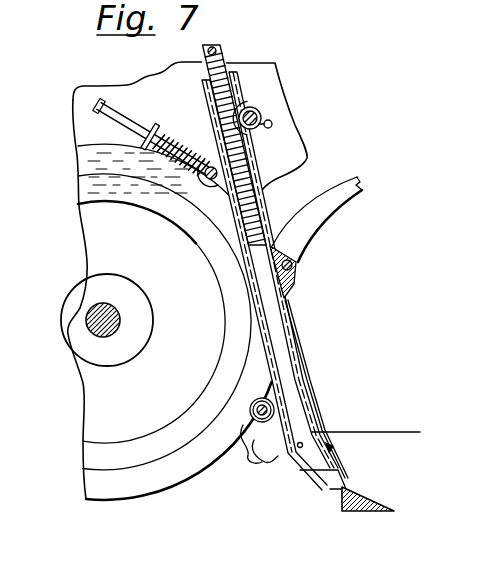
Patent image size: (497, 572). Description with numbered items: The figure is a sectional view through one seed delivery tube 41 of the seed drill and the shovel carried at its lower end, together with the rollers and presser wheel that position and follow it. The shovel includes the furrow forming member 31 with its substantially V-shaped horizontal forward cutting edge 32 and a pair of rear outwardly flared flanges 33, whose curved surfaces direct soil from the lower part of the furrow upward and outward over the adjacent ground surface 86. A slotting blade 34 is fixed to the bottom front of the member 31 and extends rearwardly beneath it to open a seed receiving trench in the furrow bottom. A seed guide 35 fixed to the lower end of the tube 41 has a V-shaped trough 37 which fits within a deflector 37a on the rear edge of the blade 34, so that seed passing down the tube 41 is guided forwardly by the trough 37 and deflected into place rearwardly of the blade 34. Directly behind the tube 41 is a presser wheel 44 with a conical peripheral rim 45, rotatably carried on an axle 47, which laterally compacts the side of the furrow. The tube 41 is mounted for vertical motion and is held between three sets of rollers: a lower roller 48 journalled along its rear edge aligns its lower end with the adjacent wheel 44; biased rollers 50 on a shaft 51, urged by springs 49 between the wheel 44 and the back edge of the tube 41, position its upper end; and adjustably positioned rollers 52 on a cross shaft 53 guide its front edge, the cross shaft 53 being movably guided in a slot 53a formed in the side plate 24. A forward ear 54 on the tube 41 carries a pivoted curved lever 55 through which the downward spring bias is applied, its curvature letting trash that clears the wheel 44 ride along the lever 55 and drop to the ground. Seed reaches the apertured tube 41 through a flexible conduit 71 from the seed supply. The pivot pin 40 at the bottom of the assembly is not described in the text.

The side plate 24 is at (272, 93).
The furrow forming member 31 is at (335, 448).
The forward cutting edge 32 is at (317, 492).
The rear outwardly flared flange 33 is at (248, 449).
The slotting blade 34 is at (374, 513).
The seed guide 35 is at (290, 463).
The V-shaped trough 37 is at (337, 477).
The deflector 37a is at (341, 487).
The pivot pin 40 is at (328, 445).
The seed delivery tube 41 is at (282, 338).
The presser wheel 44 is at (128, 414).
The conical peripheral rim 45 is at (231, 367).
The axle 47 is at (115, 325).
The lower roller 48 is at (251, 415).
The spring 49 is at (170, 129).
The biased roller 50 is at (212, 158).
The shaft 51 is at (138, 120).
The adjustably positioned roller 52 is at (248, 111).
The cross shaft 53 is at (257, 130).
The slot 53a is at (273, 118).
The forward ear 54 is at (297, 276).
The curved lever 55 is at (340, 192).
The conduit 71 is at (217, 49).
The ground surface 86 is at (388, 442).